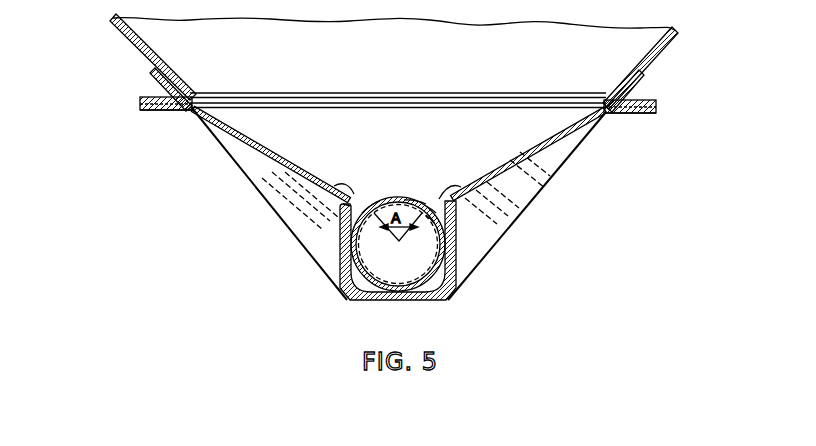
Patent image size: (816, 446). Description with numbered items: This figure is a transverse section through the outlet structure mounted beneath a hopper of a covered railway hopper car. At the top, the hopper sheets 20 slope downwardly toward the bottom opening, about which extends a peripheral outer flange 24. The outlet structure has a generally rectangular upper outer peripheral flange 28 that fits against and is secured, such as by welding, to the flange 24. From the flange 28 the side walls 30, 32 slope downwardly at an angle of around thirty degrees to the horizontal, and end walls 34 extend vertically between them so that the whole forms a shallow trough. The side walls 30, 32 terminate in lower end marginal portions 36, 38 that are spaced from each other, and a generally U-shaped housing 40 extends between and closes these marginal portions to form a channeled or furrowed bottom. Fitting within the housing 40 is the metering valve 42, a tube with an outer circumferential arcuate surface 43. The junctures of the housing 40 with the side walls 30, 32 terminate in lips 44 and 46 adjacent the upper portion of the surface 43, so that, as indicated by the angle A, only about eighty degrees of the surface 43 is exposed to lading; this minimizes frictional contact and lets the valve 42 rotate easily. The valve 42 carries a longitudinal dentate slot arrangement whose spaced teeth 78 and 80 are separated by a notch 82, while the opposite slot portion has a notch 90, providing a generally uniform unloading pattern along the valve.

The hopper sheet 20 is at (153, 58).
The peripheral outer flange 24 is at (150, 97).
The upper outer peripheral flange 28 is at (158, 111).
The side wall 30 is at (259, 146).
The side wall 32 is at (530, 133).
The end wall 34 is at (276, 213).
The lower end marginal portion 36 is at (338, 197).
The lower end marginal portion 38 is at (464, 191).
The U-shaped housing 40 is at (454, 266).
The metering valve 42 is at (353, 268).
The outer circumferential arcuate surface 43 is at (369, 203).
The lip 44 is at (358, 203).
The lip 46 is at (442, 196).
The tooth 78 is at (430, 205).
The tooth 80 is at (437, 238).
The notch 82 is at (416, 197).
The notch 90 is at (432, 217).